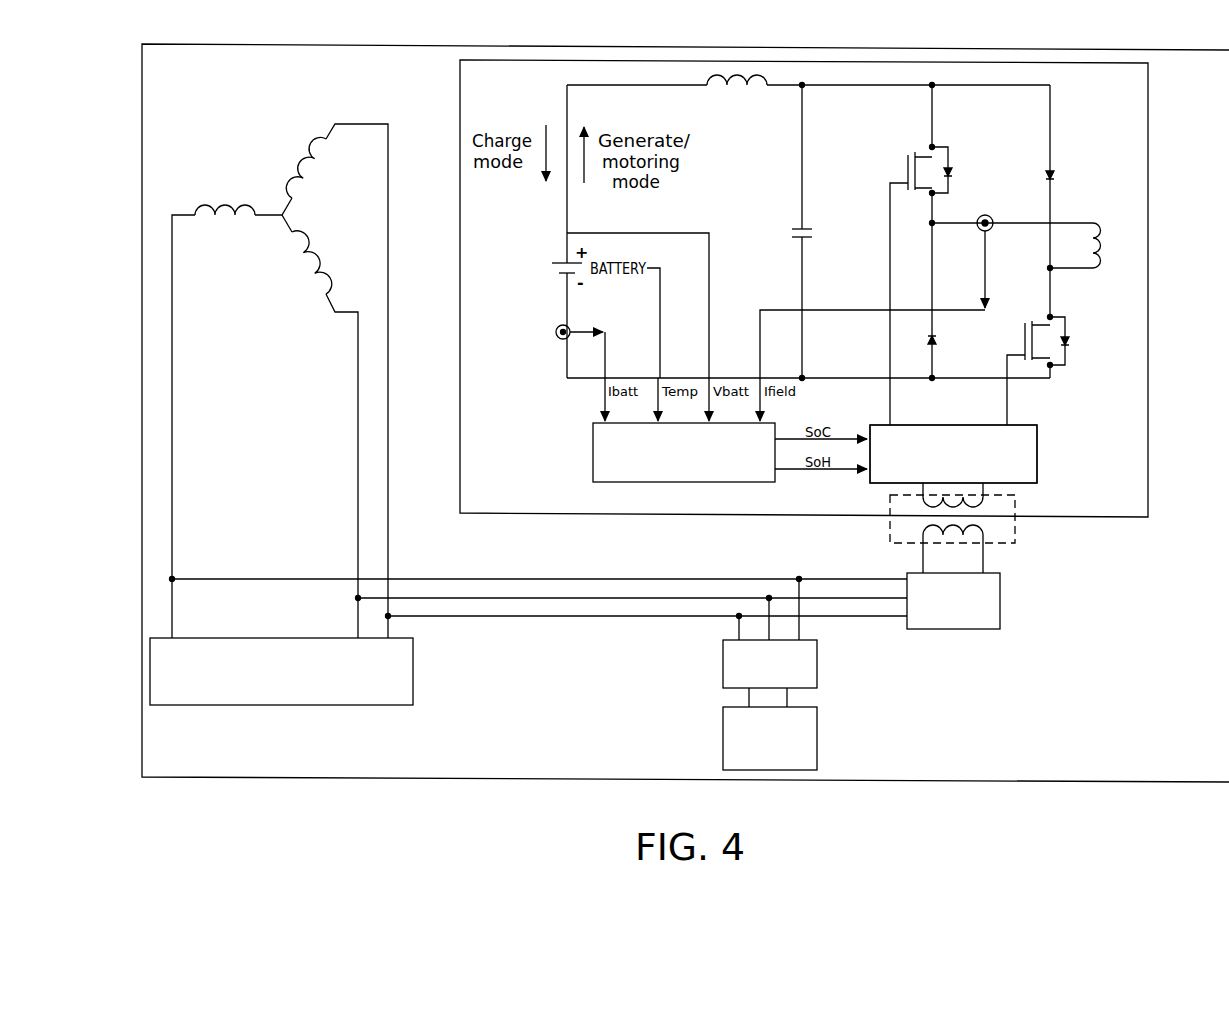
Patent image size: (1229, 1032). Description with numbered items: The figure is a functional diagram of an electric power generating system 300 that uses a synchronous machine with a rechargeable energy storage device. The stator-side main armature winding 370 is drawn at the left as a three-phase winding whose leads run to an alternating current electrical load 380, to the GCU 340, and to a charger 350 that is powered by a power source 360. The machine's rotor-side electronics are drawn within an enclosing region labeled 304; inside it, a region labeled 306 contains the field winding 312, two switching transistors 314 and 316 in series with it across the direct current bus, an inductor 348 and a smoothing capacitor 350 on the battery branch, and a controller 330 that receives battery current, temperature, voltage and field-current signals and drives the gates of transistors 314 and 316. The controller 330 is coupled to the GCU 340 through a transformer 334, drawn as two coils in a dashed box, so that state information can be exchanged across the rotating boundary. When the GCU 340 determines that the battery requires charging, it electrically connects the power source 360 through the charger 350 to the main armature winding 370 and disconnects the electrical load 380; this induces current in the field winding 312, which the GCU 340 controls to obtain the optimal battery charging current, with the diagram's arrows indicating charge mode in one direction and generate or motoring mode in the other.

The electric power generating system 300 is at (218, 784).
The battery power subsystem 304 is at (1221, 83).
The generator control section 306 is at (1136, 509).
The field winding 312 is at (1101, 265).
The first switch (transistor) 314 is at (908, 156).
The second switch (transistor) 316 is at (1075, 357).
The controller 330 is at (1037, 484).
The transformer / isolation coupling 334 is at (880, 517).
The GCU 340 is at (1000, 601).
The inductor 348 is at (735, 93).
The charger 350 is at (808, 224).
The power source 360 is at (817, 733).
The main armature winding 370 is at (298, 268).
The electrical load 380 is at (405, 705).